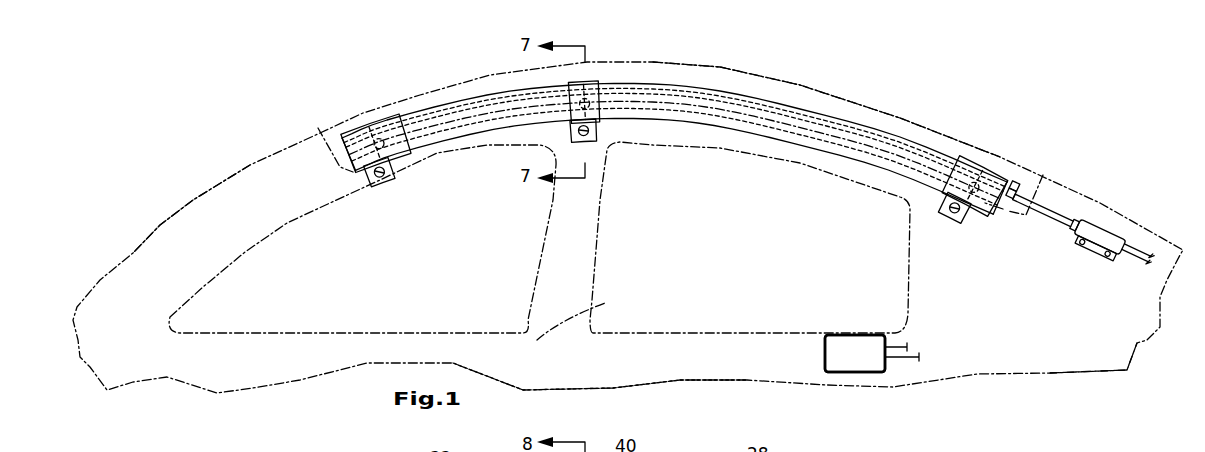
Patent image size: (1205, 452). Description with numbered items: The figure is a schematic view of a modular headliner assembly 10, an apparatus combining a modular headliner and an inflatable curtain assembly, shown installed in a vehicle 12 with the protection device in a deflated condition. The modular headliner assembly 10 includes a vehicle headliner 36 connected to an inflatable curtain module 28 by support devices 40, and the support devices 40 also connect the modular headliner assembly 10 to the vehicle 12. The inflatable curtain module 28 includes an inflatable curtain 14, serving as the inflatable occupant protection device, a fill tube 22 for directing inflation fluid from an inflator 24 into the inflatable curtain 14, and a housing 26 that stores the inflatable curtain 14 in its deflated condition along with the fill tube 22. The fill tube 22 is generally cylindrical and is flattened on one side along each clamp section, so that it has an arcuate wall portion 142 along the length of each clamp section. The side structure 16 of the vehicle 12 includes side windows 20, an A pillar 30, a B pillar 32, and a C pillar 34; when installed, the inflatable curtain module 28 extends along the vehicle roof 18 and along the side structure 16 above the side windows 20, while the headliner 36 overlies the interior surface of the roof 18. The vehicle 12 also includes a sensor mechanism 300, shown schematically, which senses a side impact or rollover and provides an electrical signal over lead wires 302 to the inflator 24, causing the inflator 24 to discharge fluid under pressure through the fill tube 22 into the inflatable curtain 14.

The modular headliner assembly 10 is at (338, 77).
The vehicle 12 is at (262, 165).
The inflatable curtain 14 is at (440, 143).
The side structure 16 is at (617, 360).
The vehicle roof 18 is at (720, 73).
The side windows 20 is at (513, 305).
The fill tube 22 is at (1025, 193).
The inflator 24 is at (1107, 230).
The housing 26 is at (638, 110).
The inflatable curtain module 28 is at (827, 143).
The A pillar 30 is at (180, 250).
The B pillar 32 is at (493, 95).
The C pillar 34 is at (995, 295).
The vehicle headliner 36 is at (322, 138).
The support device 40 is at (385, 183).
The arcuate wall portion 142 is at (367, 127).
The sensor mechanism 300 is at (860, 348).
The lead wires 302 is at (1140, 240).